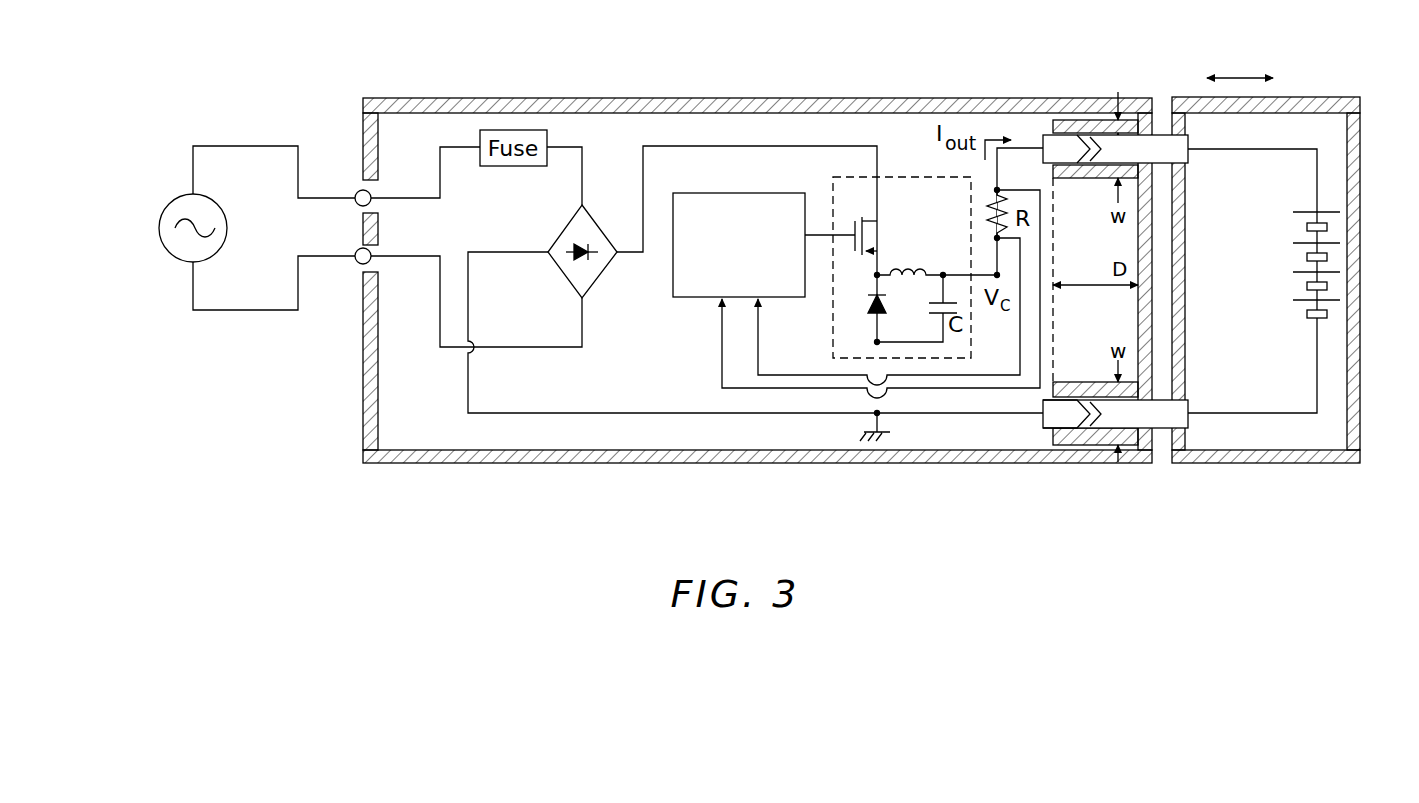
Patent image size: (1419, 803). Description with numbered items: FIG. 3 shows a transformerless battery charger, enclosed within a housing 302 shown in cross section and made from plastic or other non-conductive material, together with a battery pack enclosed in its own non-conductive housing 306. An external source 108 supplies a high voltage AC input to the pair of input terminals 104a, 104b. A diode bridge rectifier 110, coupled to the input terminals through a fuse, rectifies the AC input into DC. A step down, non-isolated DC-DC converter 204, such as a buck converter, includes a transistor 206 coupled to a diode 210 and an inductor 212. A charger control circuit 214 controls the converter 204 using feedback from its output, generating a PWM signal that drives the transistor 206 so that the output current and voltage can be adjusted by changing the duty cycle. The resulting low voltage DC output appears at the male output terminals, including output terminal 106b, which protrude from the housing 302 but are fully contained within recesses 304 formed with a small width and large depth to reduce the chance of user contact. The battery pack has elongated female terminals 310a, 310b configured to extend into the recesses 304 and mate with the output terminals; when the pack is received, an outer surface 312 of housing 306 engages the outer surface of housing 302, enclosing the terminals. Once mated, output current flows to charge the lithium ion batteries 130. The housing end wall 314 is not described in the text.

The external source 108 is at (177, 192).
The input terminal 104a is at (377, 193).
The input terminal 104b is at (378, 262).
The diode bridge rectifier 110 is at (563, 225).
The charger control circuit 214 is at (752, 192).
The non-isolated DC-DC converter 204 is at (913, 176).
The transistor 206 is at (867, 237).
The inductor 212 is at (913, 267).
The diode 210 is at (883, 303).
The housing 302 is at (758, 280).
The recesses 304 is at (1084, 187).
The housing end wall 314 is at (1154, 98).
The outer surface 312 is at (1168, 98).
The housing 306 is at (1290, 97).
The elongated female terminal 310a is at (1188, 157).
The elongated female terminal 310b is at (1140, 443).
The lithium ion batteries 130 is at (1292, 203).
The output terminal 106b is at (1036, 426).